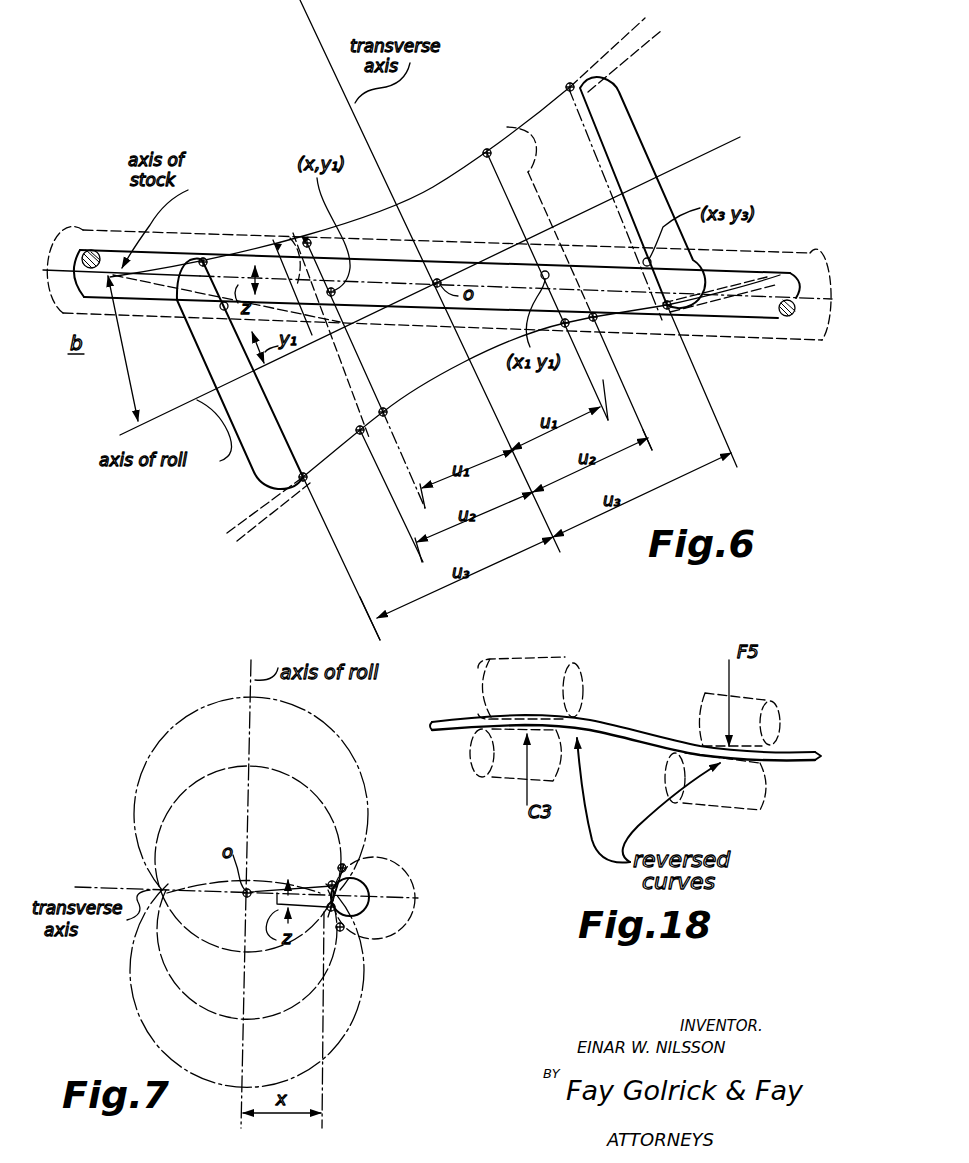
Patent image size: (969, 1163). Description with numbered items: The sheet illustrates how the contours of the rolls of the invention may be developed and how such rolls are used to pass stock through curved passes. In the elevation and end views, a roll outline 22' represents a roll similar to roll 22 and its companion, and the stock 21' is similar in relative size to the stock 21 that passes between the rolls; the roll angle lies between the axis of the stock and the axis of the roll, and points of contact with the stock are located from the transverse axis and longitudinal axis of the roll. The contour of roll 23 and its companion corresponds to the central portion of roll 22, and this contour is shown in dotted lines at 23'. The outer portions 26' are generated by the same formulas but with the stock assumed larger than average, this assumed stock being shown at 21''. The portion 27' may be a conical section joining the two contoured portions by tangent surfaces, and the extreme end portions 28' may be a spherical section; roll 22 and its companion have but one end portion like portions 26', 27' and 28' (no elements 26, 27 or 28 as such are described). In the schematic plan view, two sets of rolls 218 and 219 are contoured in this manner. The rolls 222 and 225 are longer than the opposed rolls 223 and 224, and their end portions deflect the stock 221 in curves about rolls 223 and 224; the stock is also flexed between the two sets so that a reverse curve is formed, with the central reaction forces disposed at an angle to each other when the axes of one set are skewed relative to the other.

In FIG. 6, the stock 21' is at (240, 344).
In FIG. 7, the stock 21' is at (369, 868).
In FIG. 6, the assumed stock 21'' is at (439, 267).
In FIG. 7, the assumed stock 21'' is at (374, 914).
In FIG. 6, the roll outline 22' is at (386, 147).
In FIG. 7, the roll outline 22' is at (217, 892).
In FIG. 6, the contour of central portion 23' is at (450, 336).
In FIG. 7, the contour of central portion 23' is at (130, 855).
In FIG. 6, the outer portions 26' is at (574, 242).
In FIG. 7, the outer portions 26' is at (279, 873).
In FIG. 6, the conical section 27' is at (446, 408).
In FIG. 6, the extreme end portions 28' is at (520, 358).
In FIG. 6, the stock 21 is at (240, 344).
In FIG. 7, the stock 21 is at (369, 868).
In FIG. 6, the roll 22 is at (386, 147).
In FIG. 7, the roll 22 is at (217, 892).
In FIG. 6, the roll 23 is at (450, 336).
In FIG. 7, the roll 23 is at (130, 855).
In FIG. 6, the roll 26 is at (574, 242).
In FIG. 7, the roll 26 is at (279, 873).
In FIG. 6, the roll 27 is at (446, 408).
In FIG. 6, the roll 28 is at (520, 358).
In FIG. 18, the set of rolls 218 is at (530, 676).
In FIG. 18, the set of rolls 219 is at (772, 720).
In FIG. 18, the stock 221 is at (814, 766).
In FIG. 18, the roll 222 is at (578, 663).
In FIG. 18, the roll 223 is at (508, 765).
In FIG. 18, the roll 224 is at (707, 710).
In FIG. 18, the roll 225 is at (673, 777).